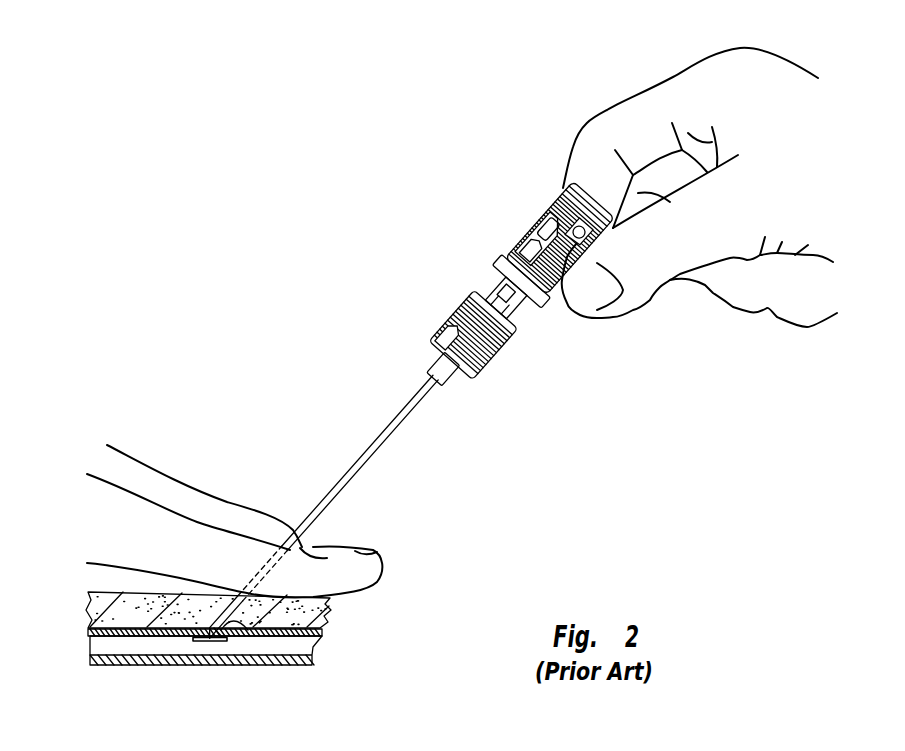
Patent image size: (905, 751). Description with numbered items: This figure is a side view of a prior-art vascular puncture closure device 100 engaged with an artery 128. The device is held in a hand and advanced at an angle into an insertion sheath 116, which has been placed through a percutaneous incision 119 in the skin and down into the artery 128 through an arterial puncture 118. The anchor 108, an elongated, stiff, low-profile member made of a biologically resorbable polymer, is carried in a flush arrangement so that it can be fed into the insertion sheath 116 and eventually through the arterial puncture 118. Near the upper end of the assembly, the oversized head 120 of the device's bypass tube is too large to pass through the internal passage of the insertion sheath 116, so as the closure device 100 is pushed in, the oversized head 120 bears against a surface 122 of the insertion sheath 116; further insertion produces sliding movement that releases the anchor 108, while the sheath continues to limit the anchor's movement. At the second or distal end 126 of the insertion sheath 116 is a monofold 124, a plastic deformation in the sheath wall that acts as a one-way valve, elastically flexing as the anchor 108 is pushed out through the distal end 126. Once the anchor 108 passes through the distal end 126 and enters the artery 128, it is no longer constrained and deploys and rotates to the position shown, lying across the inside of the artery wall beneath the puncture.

The vascular puncture closure device 100 is at (502, 258).
The anchor 108 is at (203, 643).
The insertion sheath 116 is at (413, 418).
The arterial puncture 118 is at (212, 634).
The percutaneous incision 119 is at (232, 624).
The oversized head 120 is at (507, 307).
The surface 122 is at (523, 333).
The monofold 124 is at (223, 641).
The distal end 126 is at (249, 626).
The artery 128 is at (320, 637).